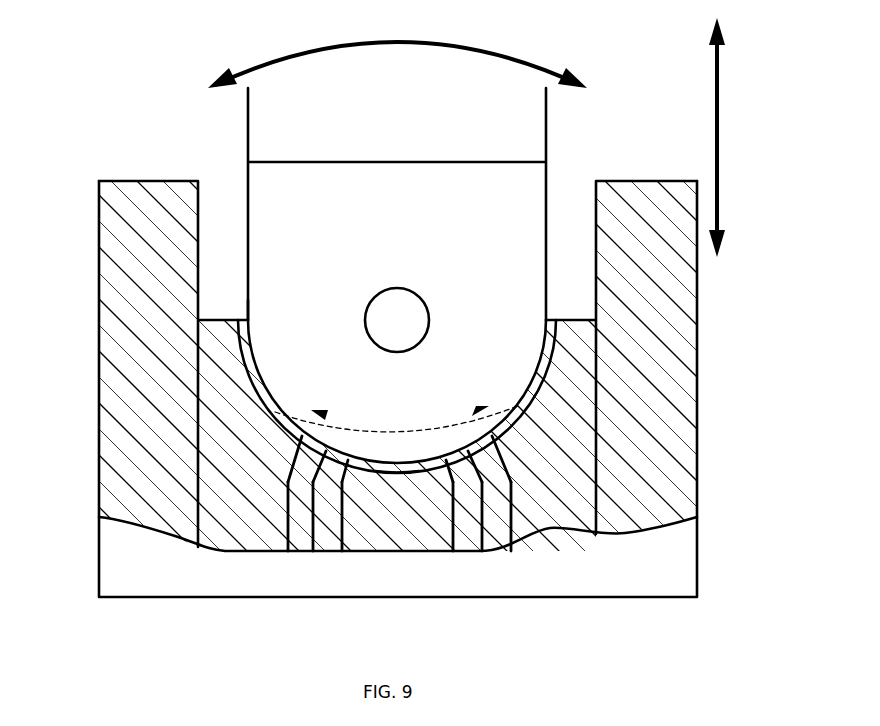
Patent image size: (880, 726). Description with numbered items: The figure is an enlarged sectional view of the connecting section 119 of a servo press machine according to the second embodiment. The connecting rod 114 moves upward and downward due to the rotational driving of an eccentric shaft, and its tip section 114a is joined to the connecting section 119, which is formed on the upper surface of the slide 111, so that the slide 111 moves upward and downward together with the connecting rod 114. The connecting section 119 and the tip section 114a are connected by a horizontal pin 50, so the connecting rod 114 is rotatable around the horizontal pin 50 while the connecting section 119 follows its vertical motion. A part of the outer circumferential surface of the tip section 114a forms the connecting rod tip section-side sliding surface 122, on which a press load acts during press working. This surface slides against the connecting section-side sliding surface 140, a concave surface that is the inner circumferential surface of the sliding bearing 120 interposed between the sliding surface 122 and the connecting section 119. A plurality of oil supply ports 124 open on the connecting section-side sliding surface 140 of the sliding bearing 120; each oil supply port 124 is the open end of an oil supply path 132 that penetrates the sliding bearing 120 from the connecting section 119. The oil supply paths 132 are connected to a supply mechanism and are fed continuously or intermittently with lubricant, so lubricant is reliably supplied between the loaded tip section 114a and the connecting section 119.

The horizontal pin 50 is at (403, 319).
The slide 111 is at (657, 556).
The connecting rod 114 is at (277, 117).
The tip section 114a is at (272, 305).
The connecting section 119 is at (585, 390).
The sliding bearing 120 is at (260, 357).
The connecting rod tip section-side sliding surface 122 is at (413, 468).
The oil supply port 124 is at (302, 436).
The oil supply path 132 is at (289, 552).
The connecting section-side sliding surface 140 is at (398, 430).